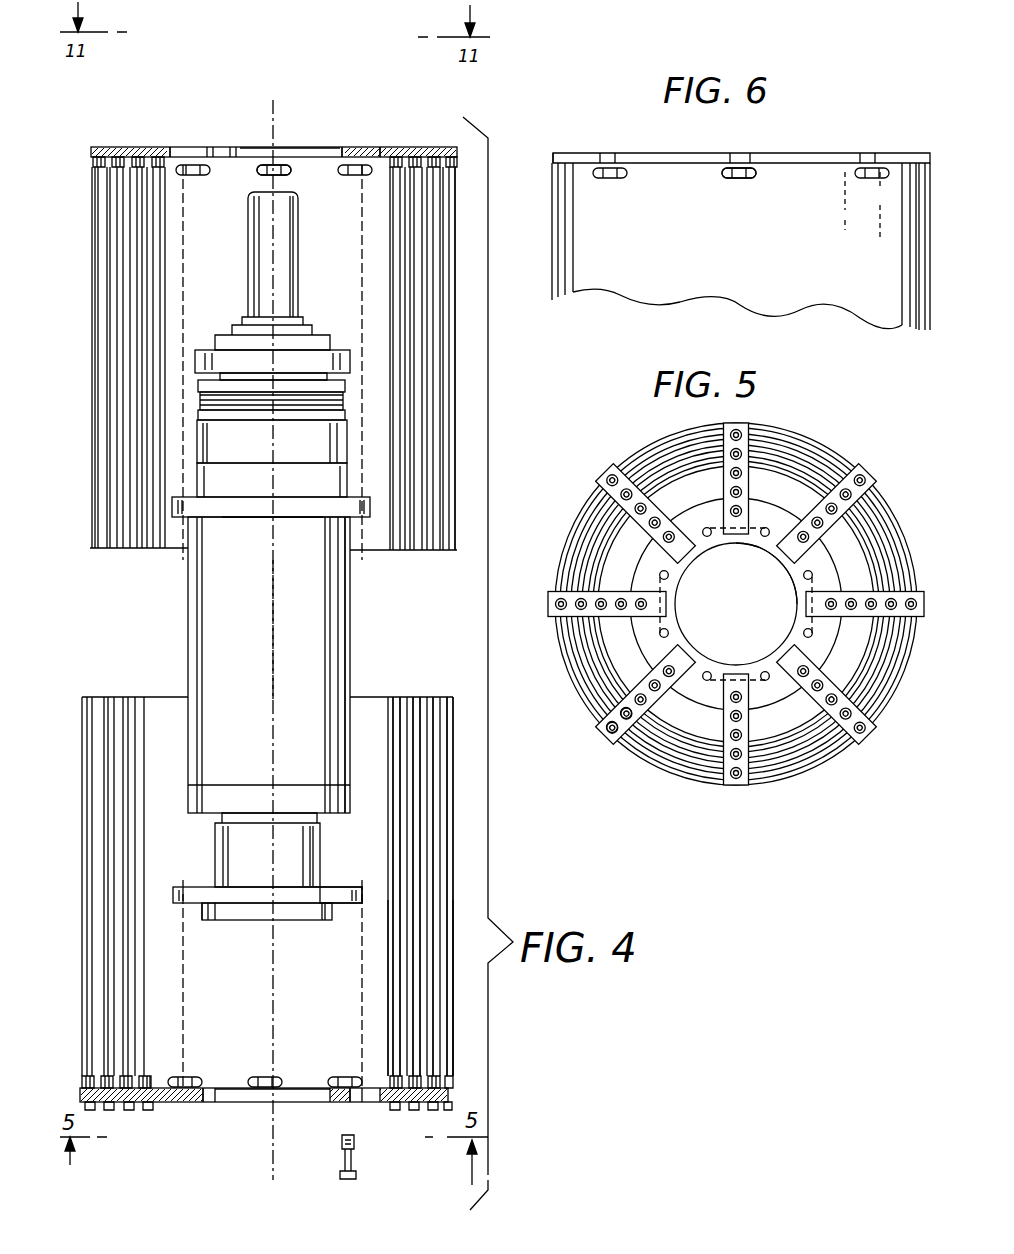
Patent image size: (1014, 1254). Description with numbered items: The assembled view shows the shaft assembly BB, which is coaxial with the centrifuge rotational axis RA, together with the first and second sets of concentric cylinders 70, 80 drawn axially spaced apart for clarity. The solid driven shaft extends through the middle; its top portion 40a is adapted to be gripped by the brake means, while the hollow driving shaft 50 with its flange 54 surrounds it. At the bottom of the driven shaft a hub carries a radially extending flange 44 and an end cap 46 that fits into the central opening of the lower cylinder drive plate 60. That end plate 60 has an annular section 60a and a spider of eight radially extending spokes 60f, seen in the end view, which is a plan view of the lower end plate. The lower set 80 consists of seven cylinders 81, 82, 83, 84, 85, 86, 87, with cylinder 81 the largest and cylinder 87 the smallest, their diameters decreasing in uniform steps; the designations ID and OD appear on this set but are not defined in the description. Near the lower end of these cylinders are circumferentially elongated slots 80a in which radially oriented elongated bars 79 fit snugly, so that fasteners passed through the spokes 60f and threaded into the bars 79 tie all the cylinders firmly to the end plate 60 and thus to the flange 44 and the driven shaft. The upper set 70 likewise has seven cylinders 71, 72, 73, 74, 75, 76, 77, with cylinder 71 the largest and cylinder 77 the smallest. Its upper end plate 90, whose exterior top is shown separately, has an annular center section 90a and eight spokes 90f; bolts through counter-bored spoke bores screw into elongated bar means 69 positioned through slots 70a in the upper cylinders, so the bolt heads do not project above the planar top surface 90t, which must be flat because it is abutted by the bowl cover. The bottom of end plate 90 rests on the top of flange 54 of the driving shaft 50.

In FIG. 4, the top portion 40a is at (300, 222).
In FIG. 4, the flange 44 is at (202, 888).
In FIG. 4, the end cap 46 is at (240, 908).
In FIG. 4, the hollow driving shaft means 50 is at (250, 672).
In FIG. 4, the flange 54 is at (288, 508).
In FIG. 4, the end plate 60 is at (243, 1105).
In FIG. 5, the end plate 60 is at (680, 613).
In FIG. 4, the annular section 60a is at (197, 1104).
In FIG. 5, the annular section 60a is at (697, 672).
In FIG. 4, the spokes 60f is at (160, 1085).
In FIG. 5, the spokes 60f is at (650, 462).
In FIG. 4, the elongated bar means 69 is at (193, 177).
In FIG. 6, the elongated bar means 69 is at (612, 179).
In FIG. 4, the first set of concentric cylinders 70 is at (86, 516).
In FIG. 6, the first set of concentric cylinders 70 is at (745, 284).
In FIG. 4, the circumferentially elongated slots 70a is at (265, 176).
In FIG. 6, the circumferentially elongated slots 70a is at (728, 177).
In FIG. 4, the cylinder 71 is at (450, 300).
In FIG. 4, the cylinder 72 is at (440, 358).
In FIG. 4, the cylinder 73 is at (433, 383).
In FIG. 4, the cylinder 74 is at (421, 410).
In FIG. 4, the cylinder 75 is at (411, 435).
In FIG. 4, the cylinder 76 is at (400, 460).
In FIG. 4, the cylinder 77 is at (390, 528).
In FIG. 4, the elongated bars 79 is at (96, 1075).
In FIG. 4, the second set of concentric cylinders 80 is at (80, 732).
In FIG. 4, the slots 80a is at (285, 1078).
In FIG. 4, the cylinder 81 is at (450, 773).
In FIG. 4, the cylinder 82 is at (442, 823).
In FIG. 4, the cylinder 83 is at (433, 847).
In FIG. 4, the cylinder 84 is at (420, 880).
In FIG. 4, the cylinder 85 is at (413, 912).
In FIG. 4, the cylinder 86 is at (400, 946).
In FIG. 4, the cylinder 87 is at (393, 992).
In FIG. 4, the upper cylinder mounting plate 90 is at (246, 124).
In FIG. 6, the upper cylinder mounting plate 90 is at (826, 153).
In FIG. 4, the annular center section 90a is at (197, 147).
In FIG. 4, the top surface 90t is at (292, 148).
In FIG. 4, the spokes 90f is at (393, 147).
In FIG. 4, the unitary assembly BB is at (352, 610).
In FIG. 4, the centrifuge rotational axis RA is at (272, 680).
In FIG. 4, the inner diameter ID is at (386, 976).
In FIG. 5, the inner diameter ID is at (853, 579).
In FIG. 4, the outer diameter OD is at (454, 1022).